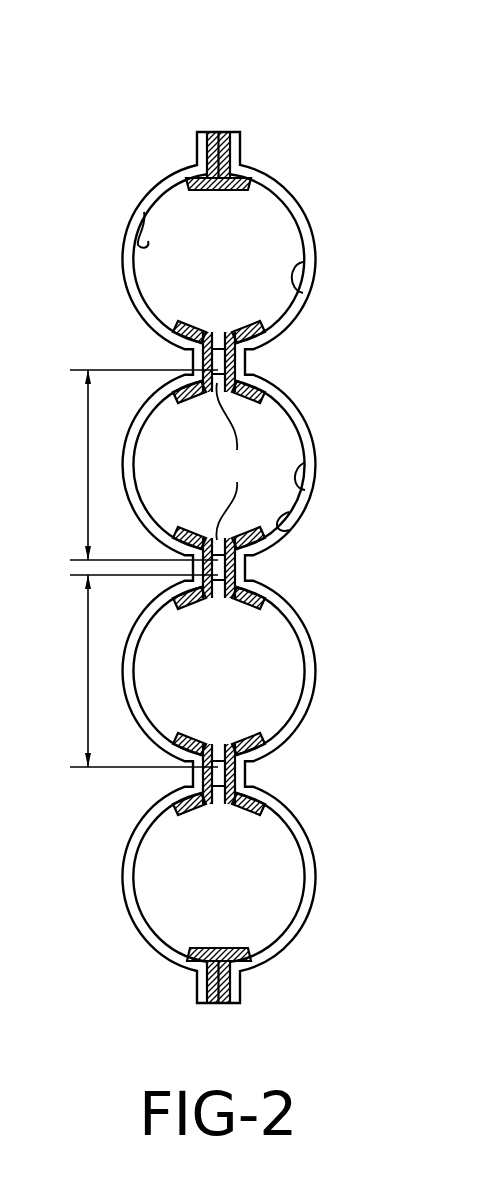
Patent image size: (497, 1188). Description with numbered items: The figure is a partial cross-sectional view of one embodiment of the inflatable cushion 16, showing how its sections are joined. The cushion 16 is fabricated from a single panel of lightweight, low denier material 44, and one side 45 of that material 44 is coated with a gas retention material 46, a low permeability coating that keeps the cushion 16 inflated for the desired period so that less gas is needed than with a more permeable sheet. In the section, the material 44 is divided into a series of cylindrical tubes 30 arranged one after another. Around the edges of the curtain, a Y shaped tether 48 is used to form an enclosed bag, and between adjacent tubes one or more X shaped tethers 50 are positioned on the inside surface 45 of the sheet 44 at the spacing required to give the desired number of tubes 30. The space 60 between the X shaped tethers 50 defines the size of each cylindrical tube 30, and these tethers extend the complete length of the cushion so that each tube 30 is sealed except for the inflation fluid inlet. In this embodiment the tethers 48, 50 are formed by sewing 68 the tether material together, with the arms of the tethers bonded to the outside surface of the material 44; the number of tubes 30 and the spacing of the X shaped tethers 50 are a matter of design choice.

The cushion 16 is at (121, 133).
The cylindrical tube 30 is at (170, 284).
The material 44 is at (301, 210).
The inside surface 45 is at (144, 212).
The gas retention material 46 is at (303, 293).
The Y shaped tether 48 is at (223, 132).
The X shaped tether 50 is at (242, 602).
The space 60 is at (88, 476).
The sewing 68 is at (236, 461).